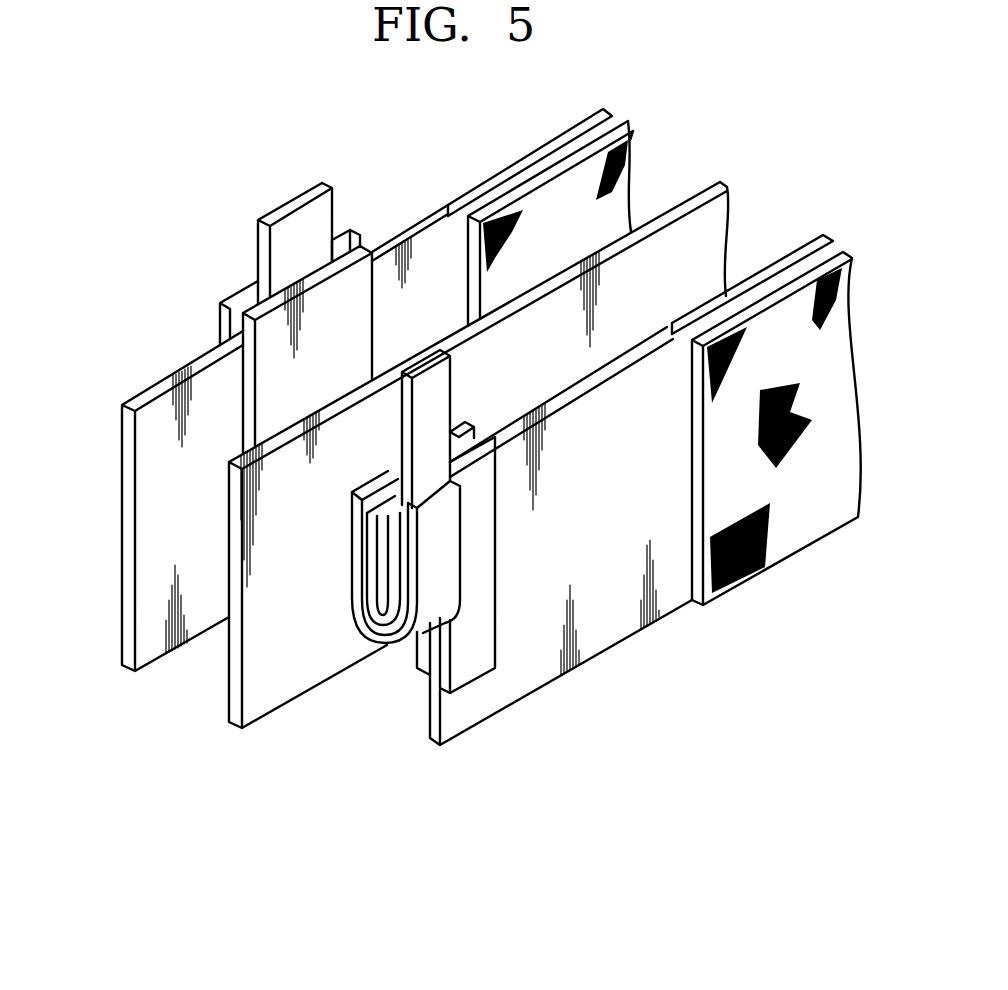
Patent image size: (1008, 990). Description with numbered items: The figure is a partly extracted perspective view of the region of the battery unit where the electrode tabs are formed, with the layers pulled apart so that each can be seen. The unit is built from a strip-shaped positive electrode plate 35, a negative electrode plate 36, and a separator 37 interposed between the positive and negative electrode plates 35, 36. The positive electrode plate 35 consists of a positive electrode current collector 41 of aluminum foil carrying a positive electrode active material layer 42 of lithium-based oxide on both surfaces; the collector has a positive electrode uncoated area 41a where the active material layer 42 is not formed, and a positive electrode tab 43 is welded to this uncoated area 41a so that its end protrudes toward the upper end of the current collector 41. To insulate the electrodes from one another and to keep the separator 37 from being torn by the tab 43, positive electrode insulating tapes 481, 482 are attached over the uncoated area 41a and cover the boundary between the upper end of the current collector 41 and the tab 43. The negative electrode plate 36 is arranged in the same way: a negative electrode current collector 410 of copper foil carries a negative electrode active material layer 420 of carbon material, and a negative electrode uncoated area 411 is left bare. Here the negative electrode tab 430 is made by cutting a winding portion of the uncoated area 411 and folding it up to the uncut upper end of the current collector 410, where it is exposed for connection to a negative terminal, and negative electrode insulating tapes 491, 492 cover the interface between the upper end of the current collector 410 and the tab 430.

The positive electrode plate 35 is at (152, 550).
The negative electrode plate 36 is at (522, 587).
The separator 37 is at (233, 748).
The positive electrode current collector 41 is at (427, 255).
The positive electrode uncoated area 41a is at (165, 523).
The positive electrode active material layer 42 is at (558, 203).
The positive electrode tab 43 is at (299, 220).
The negative electrode current collector 410 is at (554, 536).
The negative electrode uncoated area 411 is at (631, 535).
The negative electrode active material layer 420 is at (797, 540).
The negative electrode tab 430 is at (432, 391).
The positive electrode insulating tape 481 is at (248, 325).
The positive electrode insulating tape 482 is at (233, 298).
The negative electrode insulating tape 491 is at (478, 660).
The negative electrode insulating tape 492 is at (362, 588).